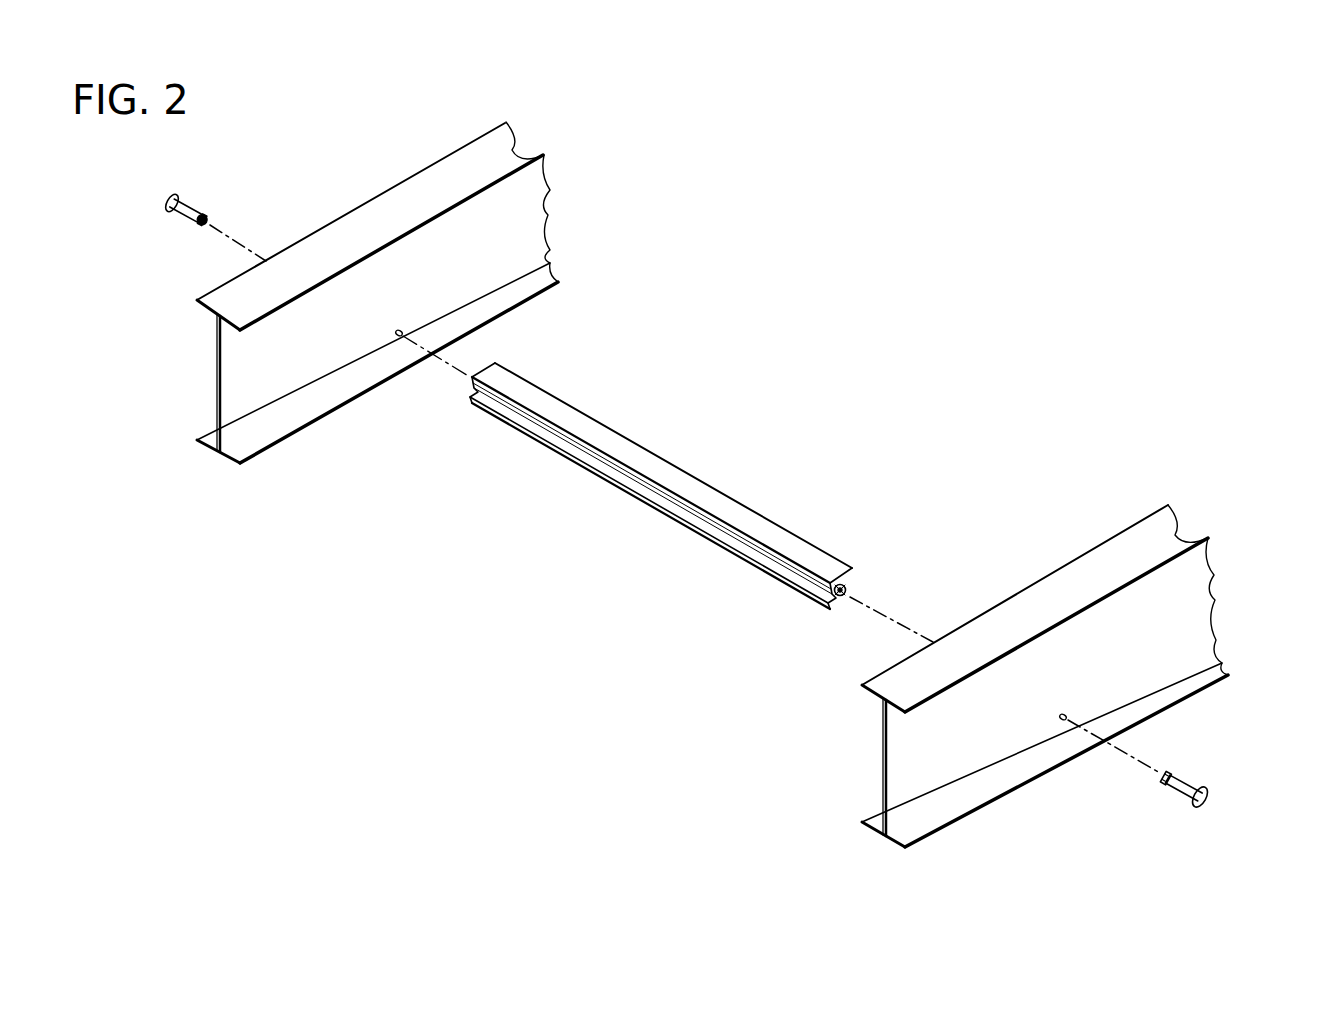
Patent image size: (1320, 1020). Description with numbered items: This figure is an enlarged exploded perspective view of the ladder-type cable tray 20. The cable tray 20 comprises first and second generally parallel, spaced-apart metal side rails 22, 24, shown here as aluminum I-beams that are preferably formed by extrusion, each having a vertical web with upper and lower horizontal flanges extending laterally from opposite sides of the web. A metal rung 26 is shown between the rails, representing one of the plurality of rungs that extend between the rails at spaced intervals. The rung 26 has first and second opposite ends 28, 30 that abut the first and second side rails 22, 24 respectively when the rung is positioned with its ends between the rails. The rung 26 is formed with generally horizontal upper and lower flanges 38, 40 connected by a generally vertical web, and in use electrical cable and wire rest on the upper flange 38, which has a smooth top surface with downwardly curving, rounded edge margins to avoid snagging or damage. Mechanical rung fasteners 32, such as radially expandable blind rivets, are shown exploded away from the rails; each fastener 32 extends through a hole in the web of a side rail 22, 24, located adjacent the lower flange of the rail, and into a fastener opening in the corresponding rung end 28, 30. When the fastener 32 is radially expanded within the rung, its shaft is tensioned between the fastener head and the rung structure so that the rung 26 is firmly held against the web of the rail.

The cable tray 20 is at (1036, 269).
The first side rail 22 is at (415, 286).
The second side rail 24 is at (1054, 664).
The rung 26 is at (706, 489).
The first end 28 is at (476, 375).
The second end 30 is at (848, 582).
The rung fastener 32 is at (208, 193).
The upper flange 38 is at (748, 520).
The lower flange 40 is at (733, 557).